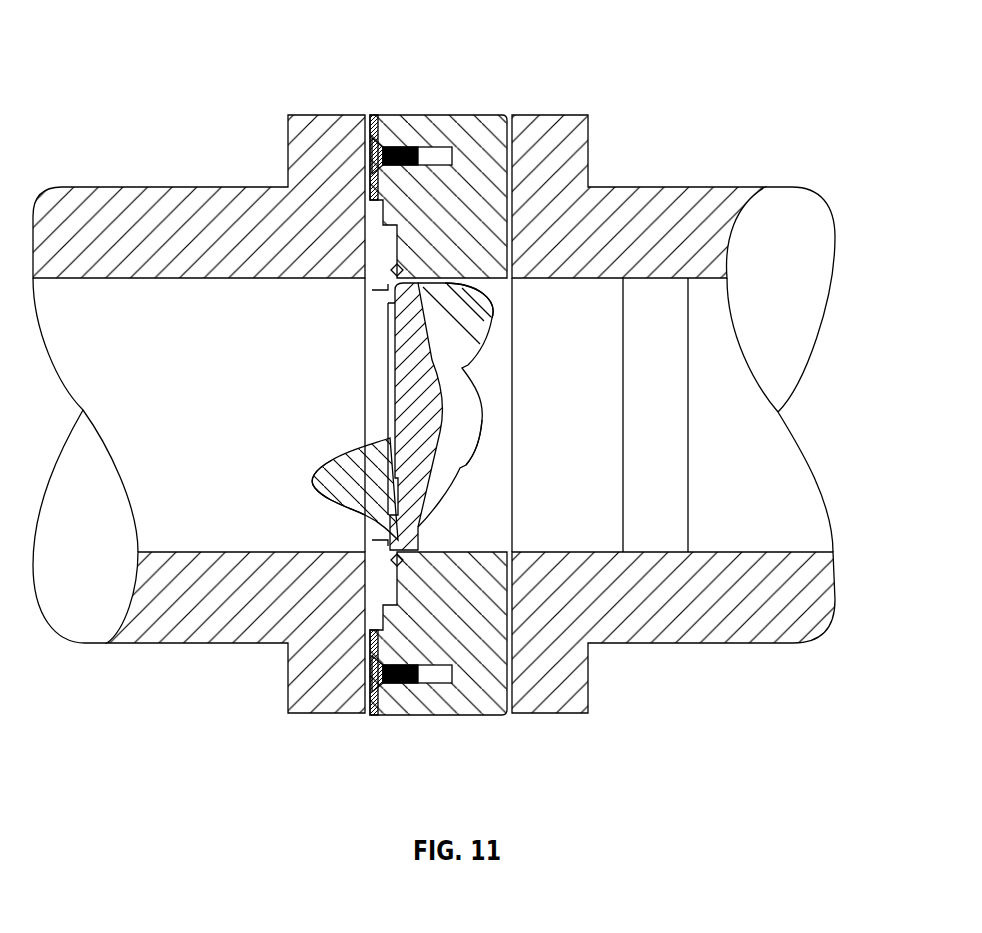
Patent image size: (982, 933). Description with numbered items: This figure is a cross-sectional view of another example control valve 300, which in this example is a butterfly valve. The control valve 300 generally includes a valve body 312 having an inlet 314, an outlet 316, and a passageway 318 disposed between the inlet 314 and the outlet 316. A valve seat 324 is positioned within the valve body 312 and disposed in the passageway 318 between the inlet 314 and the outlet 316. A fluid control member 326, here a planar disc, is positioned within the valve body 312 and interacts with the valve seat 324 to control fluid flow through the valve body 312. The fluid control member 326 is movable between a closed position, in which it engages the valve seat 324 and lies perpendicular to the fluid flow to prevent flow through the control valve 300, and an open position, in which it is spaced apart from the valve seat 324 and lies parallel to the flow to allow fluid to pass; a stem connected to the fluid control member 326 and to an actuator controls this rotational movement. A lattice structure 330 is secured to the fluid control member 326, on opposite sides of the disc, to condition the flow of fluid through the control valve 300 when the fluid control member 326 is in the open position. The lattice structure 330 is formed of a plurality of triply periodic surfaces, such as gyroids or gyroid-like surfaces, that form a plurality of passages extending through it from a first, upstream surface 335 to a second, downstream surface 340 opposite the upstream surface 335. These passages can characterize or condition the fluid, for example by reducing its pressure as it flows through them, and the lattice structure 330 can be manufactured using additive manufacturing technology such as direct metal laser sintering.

The control valve 300 is at (236, 58).
The valve body 312 is at (440, 137).
The inlet 314 is at (364, 386).
The outlet 316 is at (513, 413).
The passageway 318 is at (465, 320).
The valve seat 324 is at (390, 289).
The fluid control member 326 is at (469, 424).
The lattice structure 330 is at (480, 327).
The first, upstream surface 335 is at (466, 279).
The second, downstream surface 340 is at (479, 343).